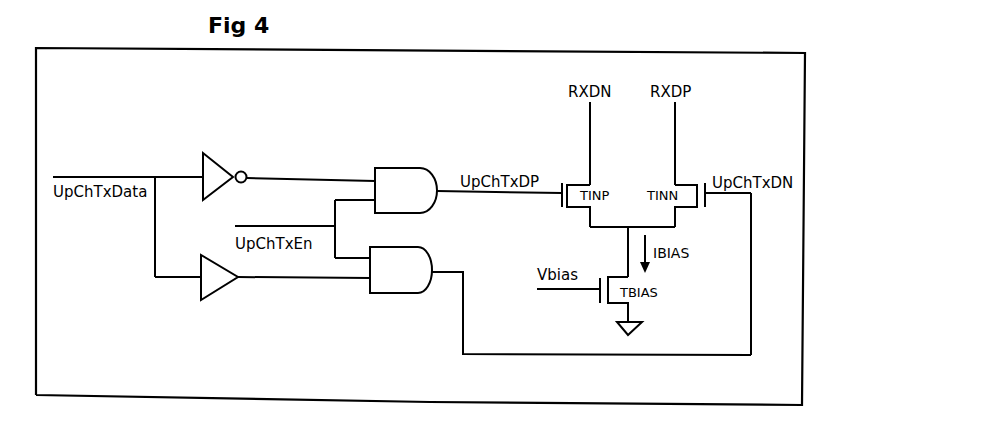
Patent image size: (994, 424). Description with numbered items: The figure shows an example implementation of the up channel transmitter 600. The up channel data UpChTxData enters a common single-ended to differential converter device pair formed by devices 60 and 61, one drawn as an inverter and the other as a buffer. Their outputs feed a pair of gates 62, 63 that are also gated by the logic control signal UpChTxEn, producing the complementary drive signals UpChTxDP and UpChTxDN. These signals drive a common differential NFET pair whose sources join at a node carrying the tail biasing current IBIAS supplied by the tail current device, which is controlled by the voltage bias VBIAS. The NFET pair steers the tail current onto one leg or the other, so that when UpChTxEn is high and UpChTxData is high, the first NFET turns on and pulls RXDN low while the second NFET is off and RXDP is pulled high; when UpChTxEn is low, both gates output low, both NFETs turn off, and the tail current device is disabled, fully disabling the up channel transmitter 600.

The single-ended to differential converter device 60 is at (196, 136).
The single-ended to differential converter device 61 is at (202, 321).
The AND gate 62 is at (398, 140).
The AND gate 63 is at (384, 321).
The up channel transmitter 600 is at (810, 105).